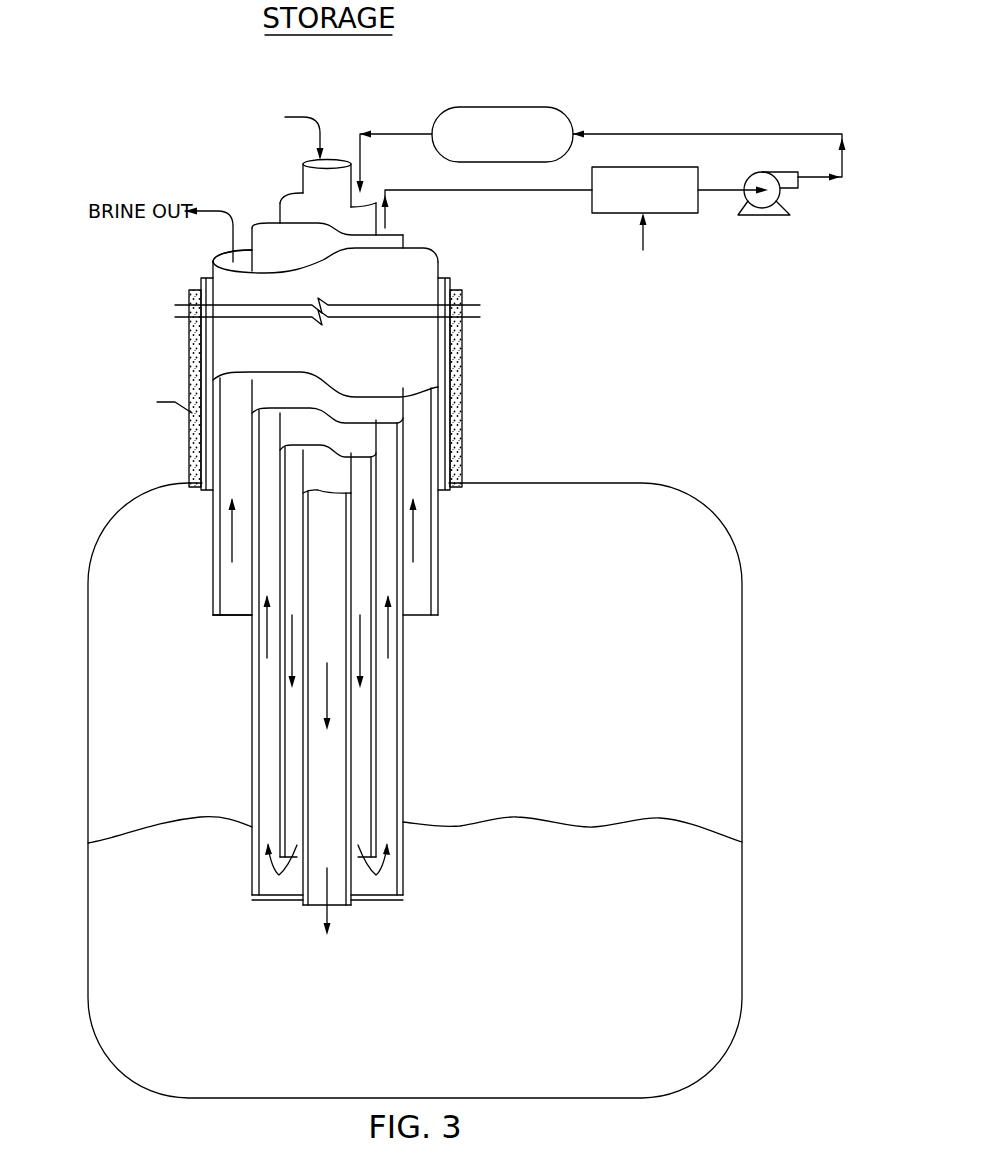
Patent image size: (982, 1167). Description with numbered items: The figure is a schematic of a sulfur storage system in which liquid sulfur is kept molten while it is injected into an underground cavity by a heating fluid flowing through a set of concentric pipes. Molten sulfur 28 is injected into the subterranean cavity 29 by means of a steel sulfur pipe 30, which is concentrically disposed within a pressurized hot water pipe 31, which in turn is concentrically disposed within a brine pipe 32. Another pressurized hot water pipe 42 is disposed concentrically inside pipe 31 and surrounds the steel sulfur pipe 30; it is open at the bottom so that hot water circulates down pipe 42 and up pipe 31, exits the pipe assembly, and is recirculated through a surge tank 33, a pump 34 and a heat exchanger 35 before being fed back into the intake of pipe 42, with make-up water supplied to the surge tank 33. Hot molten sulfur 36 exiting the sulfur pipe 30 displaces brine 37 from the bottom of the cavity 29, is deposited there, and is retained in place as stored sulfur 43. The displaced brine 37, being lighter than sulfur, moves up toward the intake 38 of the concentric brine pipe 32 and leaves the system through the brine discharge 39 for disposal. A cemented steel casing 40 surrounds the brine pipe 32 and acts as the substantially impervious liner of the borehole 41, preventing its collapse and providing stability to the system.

The molten sulfur 28 is at (320, 130).
The subterranean cavity 29 is at (162, 491).
The steel sulfur pipe 30 is at (303, 170).
The pressurized hot water pipe 31 is at (252, 228).
The brine pipe 32 is at (438, 527).
The surge tank 33 is at (613, 213).
The pump 34 is at (780, 192).
The heat exchanger 35 is at (493, 105).
The hot molten sulfur 36 is at (327, 907).
The brine 37 is at (562, 718).
The intake 38 is at (231, 617).
The brine discharge 39 is at (218, 258).
The cemented steel casing 40 is at (198, 360).
The borehole 41 is at (189, 293).
The pressurized hot water pipe 42 is at (280, 203).
The stored sulfur 43 is at (513, 940).